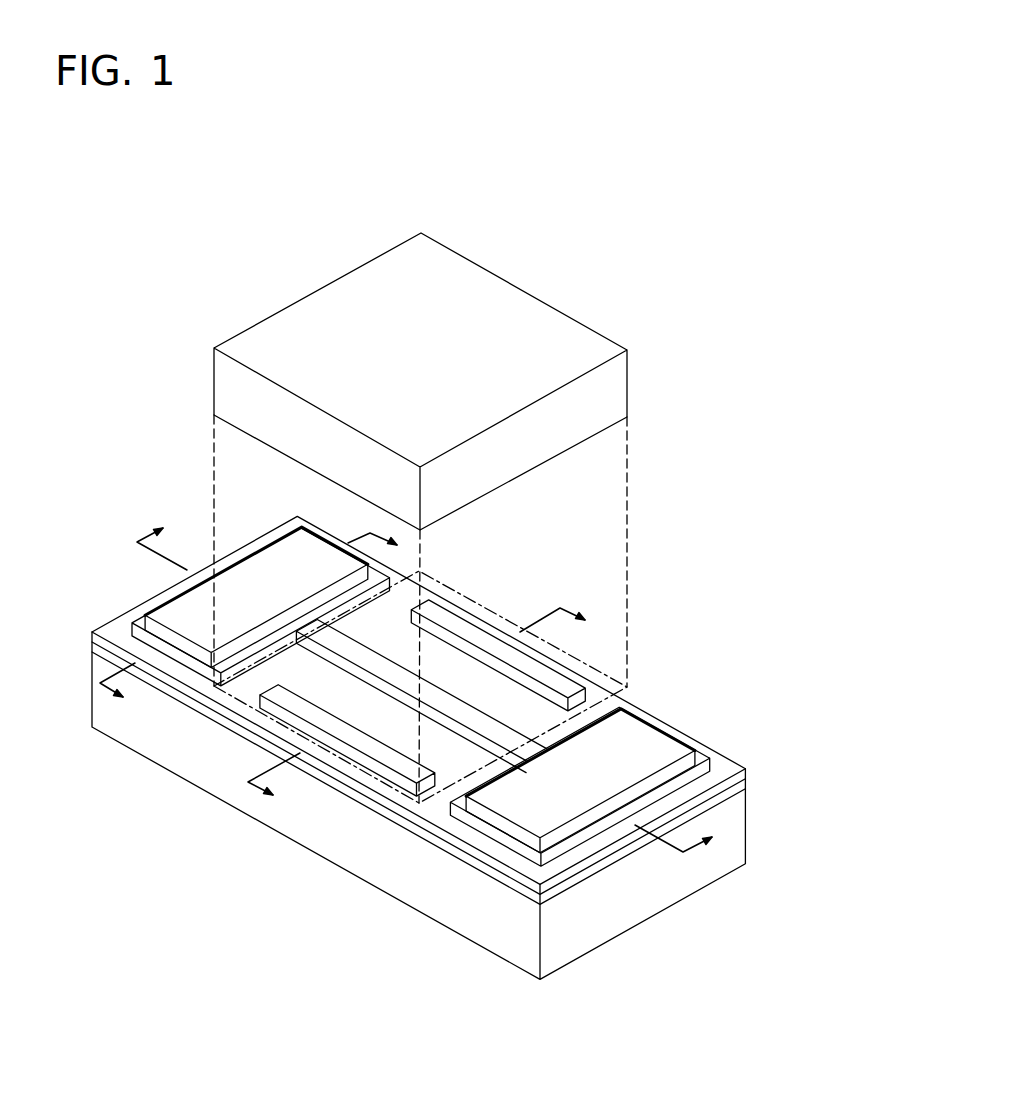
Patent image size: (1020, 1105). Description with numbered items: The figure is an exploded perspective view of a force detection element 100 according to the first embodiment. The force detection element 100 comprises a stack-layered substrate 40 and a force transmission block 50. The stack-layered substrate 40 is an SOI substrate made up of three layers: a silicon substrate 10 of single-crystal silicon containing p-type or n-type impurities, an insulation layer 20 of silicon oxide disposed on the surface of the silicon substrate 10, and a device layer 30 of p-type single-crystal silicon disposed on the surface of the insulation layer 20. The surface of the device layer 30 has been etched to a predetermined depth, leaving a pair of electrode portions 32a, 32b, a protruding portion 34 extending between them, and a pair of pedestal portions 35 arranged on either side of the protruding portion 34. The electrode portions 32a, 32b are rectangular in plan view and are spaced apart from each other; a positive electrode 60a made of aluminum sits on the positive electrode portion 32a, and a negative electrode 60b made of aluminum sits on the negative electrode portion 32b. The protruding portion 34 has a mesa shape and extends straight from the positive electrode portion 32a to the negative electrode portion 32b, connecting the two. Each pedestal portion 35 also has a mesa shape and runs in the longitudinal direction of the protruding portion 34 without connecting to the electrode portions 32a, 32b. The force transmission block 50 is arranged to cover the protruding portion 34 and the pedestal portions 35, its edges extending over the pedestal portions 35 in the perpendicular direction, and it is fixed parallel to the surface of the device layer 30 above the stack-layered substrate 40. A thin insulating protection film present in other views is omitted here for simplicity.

The force detection element 100 is at (688, 122).
The silicon substrate 10 is at (813, 755).
The insulation layer 20 is at (748, 787).
The device layer 30 is at (745, 770).
The stack-layered substrate 40 is at (477, 747).
The positive electrode portion 32a is at (134, 611).
The negative electrode portion 32b is at (688, 762).
The protruding portion 34 is at (430, 690).
The pedestal portions 35 is at (447, 620).
The force transmission block 50 is at (610, 388).
The positive electrode 60a is at (170, 615).
The negative electrode 60b is at (635, 737).